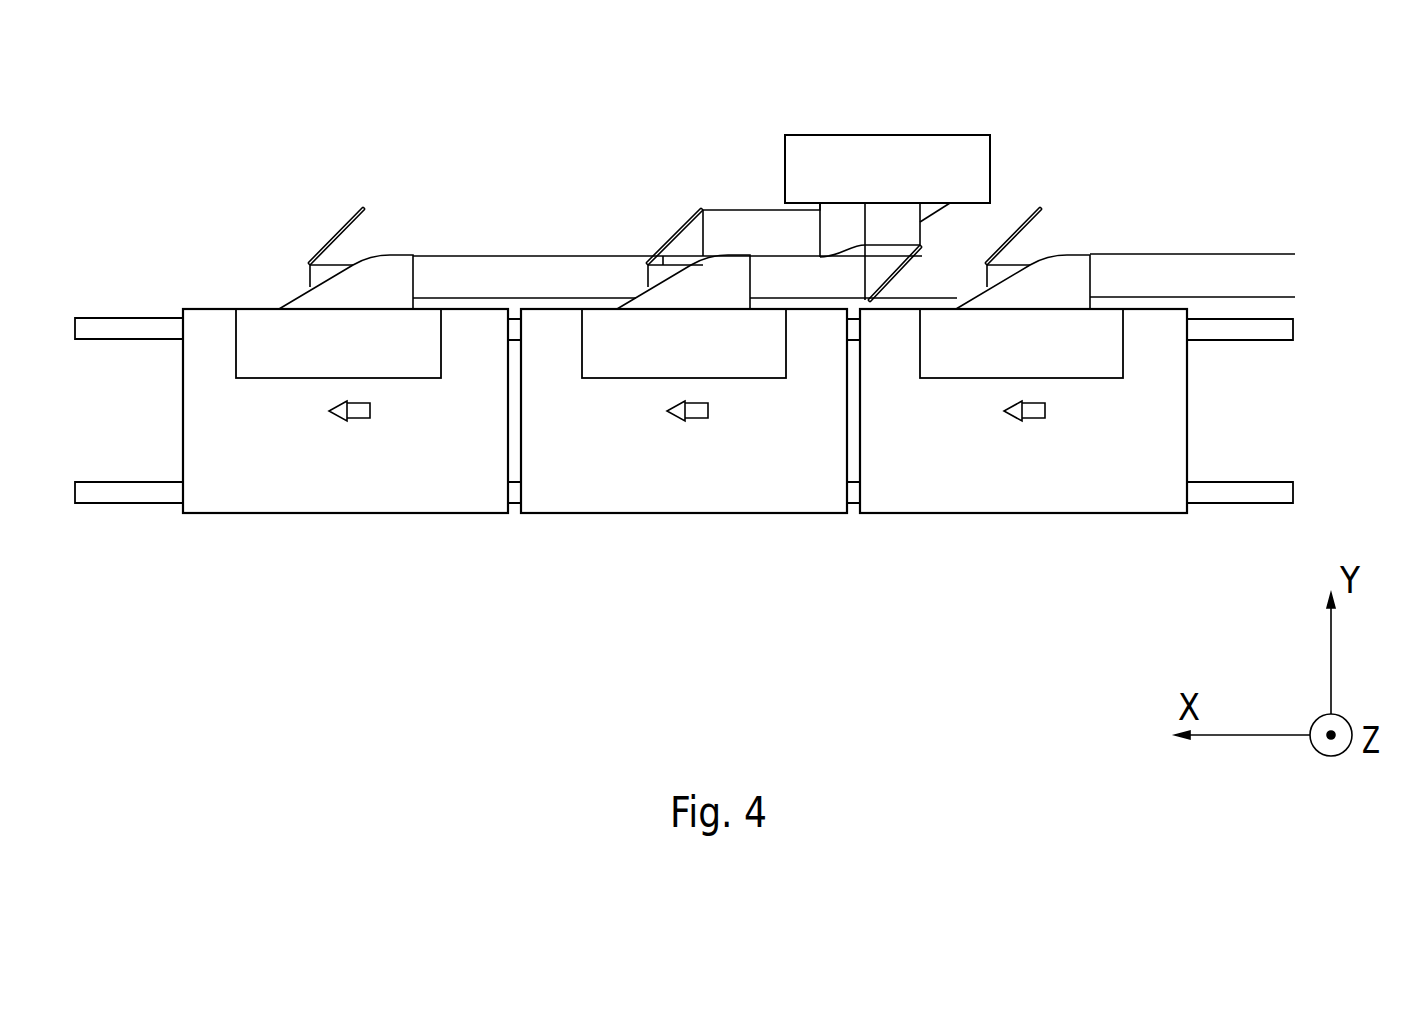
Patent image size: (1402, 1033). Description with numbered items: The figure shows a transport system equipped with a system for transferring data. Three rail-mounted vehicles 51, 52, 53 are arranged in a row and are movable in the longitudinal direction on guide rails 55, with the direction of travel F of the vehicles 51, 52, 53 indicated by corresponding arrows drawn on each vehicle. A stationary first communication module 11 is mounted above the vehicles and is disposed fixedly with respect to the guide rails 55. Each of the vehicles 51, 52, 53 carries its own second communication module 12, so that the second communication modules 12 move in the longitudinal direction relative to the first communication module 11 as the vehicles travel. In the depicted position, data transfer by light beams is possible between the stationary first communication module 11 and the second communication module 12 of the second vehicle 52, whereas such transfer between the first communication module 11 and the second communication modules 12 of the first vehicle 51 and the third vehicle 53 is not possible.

The first communication module 11 is at (906, 185).
The second communication module 12 is at (357, 362).
The first vehicle 51 is at (448, 475).
The second vehicle 52 is at (803, 474).
The third vehicle 53 is at (1140, 484).
The guide rails 55 is at (1263, 330).
The direction of travel F is at (988, 620).